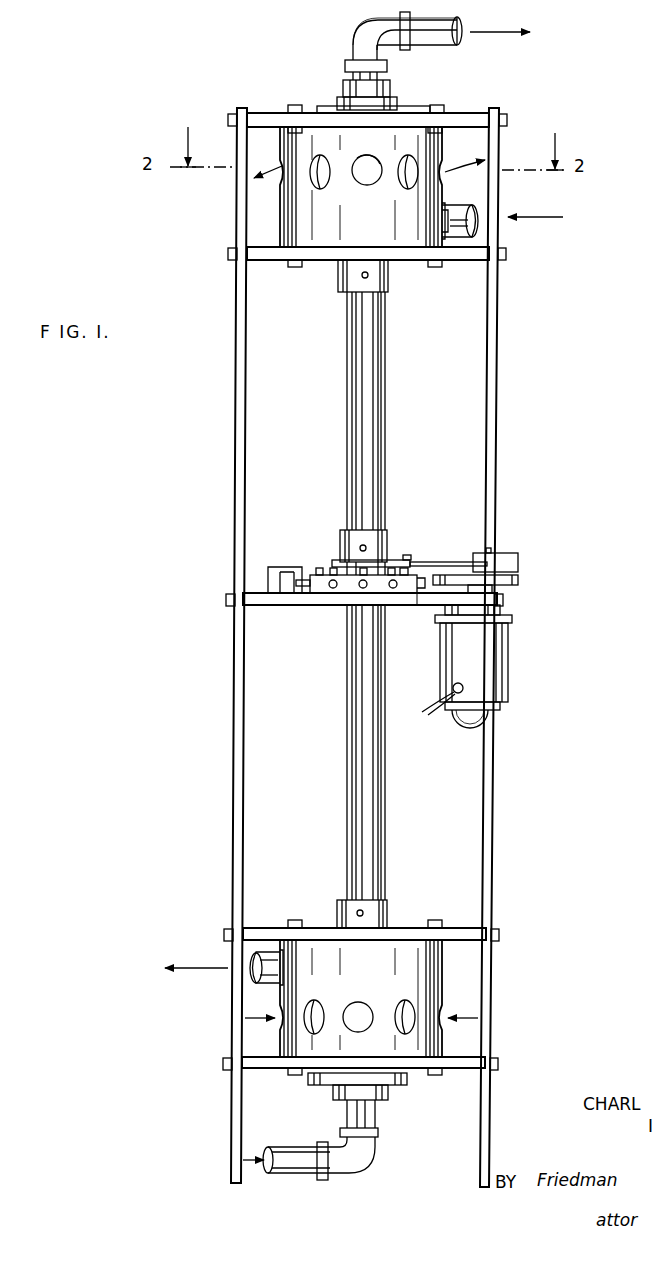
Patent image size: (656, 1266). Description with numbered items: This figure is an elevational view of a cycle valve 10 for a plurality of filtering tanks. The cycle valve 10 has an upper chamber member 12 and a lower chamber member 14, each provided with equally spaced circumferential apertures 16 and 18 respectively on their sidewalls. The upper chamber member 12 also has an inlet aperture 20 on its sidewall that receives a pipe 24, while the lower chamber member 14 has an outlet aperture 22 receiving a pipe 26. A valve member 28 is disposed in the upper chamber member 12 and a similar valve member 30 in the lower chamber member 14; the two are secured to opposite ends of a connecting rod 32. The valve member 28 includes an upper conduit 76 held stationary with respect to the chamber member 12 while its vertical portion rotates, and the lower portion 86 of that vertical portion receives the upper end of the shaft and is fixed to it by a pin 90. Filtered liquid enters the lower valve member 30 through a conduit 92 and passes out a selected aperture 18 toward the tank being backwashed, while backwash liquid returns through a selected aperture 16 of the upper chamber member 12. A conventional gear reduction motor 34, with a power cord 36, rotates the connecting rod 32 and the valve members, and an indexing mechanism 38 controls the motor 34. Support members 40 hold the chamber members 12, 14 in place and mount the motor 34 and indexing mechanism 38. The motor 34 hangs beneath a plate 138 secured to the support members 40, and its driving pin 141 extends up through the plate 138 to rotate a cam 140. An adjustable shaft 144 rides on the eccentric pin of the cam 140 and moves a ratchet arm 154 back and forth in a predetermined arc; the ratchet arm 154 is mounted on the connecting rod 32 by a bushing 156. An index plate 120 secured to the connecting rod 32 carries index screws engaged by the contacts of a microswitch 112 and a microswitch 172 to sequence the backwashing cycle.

The cycle valve 10 is at (520, 432).
The upper chamber member 12 is at (361, 187).
The lower chamber member 14 is at (361, 998).
The circumferential apertures 16 is at (376, 160).
The circumferential apertures 18 is at (362, 1002).
The inlet aperture 20 is at (440, 222).
The outlet aperture 22 is at (280, 985).
The pipe 24 is at (473, 232).
The pipe 26 is at (268, 958).
The valve member 28 is at (363, 30).
The valve member 30 is at (352, 1156).
The connecting rod 32 is at (363, 483).
The gear reduction motor 34 is at (485, 660).
The power cord 36 is at (432, 712).
The indexing mechanism 38 is at (405, 525).
The support members 40 is at (237, 430).
The upper conduit 76 is at (380, 76).
The lower portion 86 is at (373, 284).
The pin 90 is at (362, 276).
The conduit 92 is at (296, 1166).
The microswitch 112 is at (270, 575).
The index plate 120 is at (400, 593).
The plate 138 is at (298, 604).
The cam 140 is at (520, 580).
The driving pin 141 is at (492, 590).
The adjustable shaft 144 is at (500, 562).
The ratchet arm 154 is at (420, 562).
The bushing 156 is at (366, 548).
The microswitch 172 is at (292, 580).